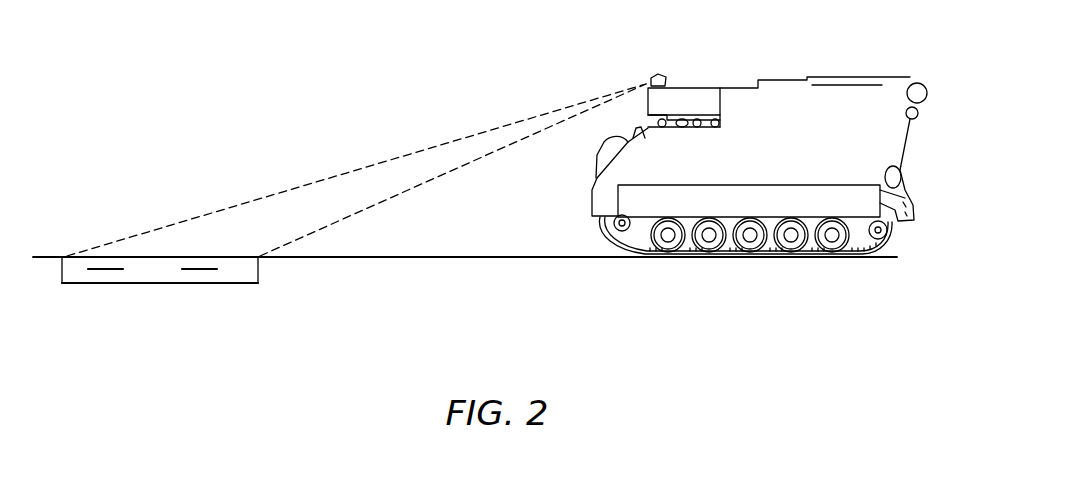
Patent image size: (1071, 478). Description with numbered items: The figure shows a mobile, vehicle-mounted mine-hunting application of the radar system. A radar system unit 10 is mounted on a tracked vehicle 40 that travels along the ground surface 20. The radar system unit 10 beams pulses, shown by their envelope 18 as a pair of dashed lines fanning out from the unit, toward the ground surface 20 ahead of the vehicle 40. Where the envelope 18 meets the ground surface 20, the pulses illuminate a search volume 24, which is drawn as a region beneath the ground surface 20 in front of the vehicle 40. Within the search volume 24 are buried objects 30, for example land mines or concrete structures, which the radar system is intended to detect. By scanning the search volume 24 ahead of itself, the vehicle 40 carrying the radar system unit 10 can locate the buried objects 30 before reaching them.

The radar system unit 10 is at (658, 72).
The envelope 18 is at (394, 157).
The ground surface 20 is at (497, 258).
The search volume 24 is at (157, 285).
The buried objects 30 is at (98, 272).
The vehicle 40 is at (863, 75).